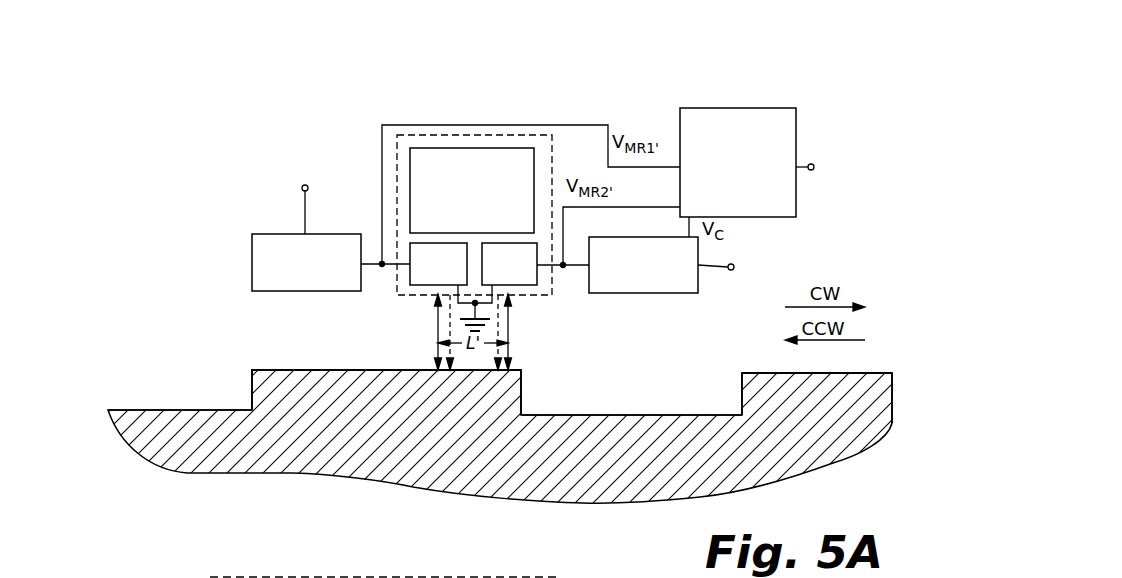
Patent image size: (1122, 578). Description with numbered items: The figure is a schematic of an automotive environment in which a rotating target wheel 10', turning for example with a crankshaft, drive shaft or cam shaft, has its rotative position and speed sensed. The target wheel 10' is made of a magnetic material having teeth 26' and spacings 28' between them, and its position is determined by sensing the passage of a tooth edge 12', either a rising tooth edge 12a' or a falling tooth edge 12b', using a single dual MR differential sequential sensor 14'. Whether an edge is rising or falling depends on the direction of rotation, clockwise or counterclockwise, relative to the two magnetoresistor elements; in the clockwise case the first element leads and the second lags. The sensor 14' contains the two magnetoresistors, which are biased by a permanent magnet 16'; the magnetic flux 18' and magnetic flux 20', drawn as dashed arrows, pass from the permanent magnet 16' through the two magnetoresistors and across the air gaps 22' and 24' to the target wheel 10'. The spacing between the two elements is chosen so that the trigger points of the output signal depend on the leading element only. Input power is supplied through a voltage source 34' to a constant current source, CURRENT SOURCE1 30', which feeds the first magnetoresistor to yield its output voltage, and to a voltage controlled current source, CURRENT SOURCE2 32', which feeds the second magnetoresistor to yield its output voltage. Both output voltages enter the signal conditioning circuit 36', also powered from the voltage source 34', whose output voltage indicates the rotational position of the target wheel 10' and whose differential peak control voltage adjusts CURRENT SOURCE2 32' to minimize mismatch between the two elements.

The target wheel 10' is at (486, 434).
The tooth edge 12' is at (572, 370).
The rising tooth edge 12a' is at (412, 391).
The falling tooth edge 12b' is at (802, 385).
The dual MR differential sequential sensor 14' is at (428, 232).
The permanent magnet 16' is at (453, 152).
The magnetic flux 18' is at (406, 235).
The magnetic flux 20' is at (550, 247).
The air gap 22' is at (395, 332).
The air gap 24' is at (554, 332).
The teeth 26' is at (542, 317).
The spacings 28' is at (425, 378).
The CURRENT SOURCE1 30' is at (262, 262).
The CURRENT SOURCE2 32' is at (643, 289).
The voltage source 34' is at (504, 214).
The signal conditioning circuit 36' is at (775, 139).